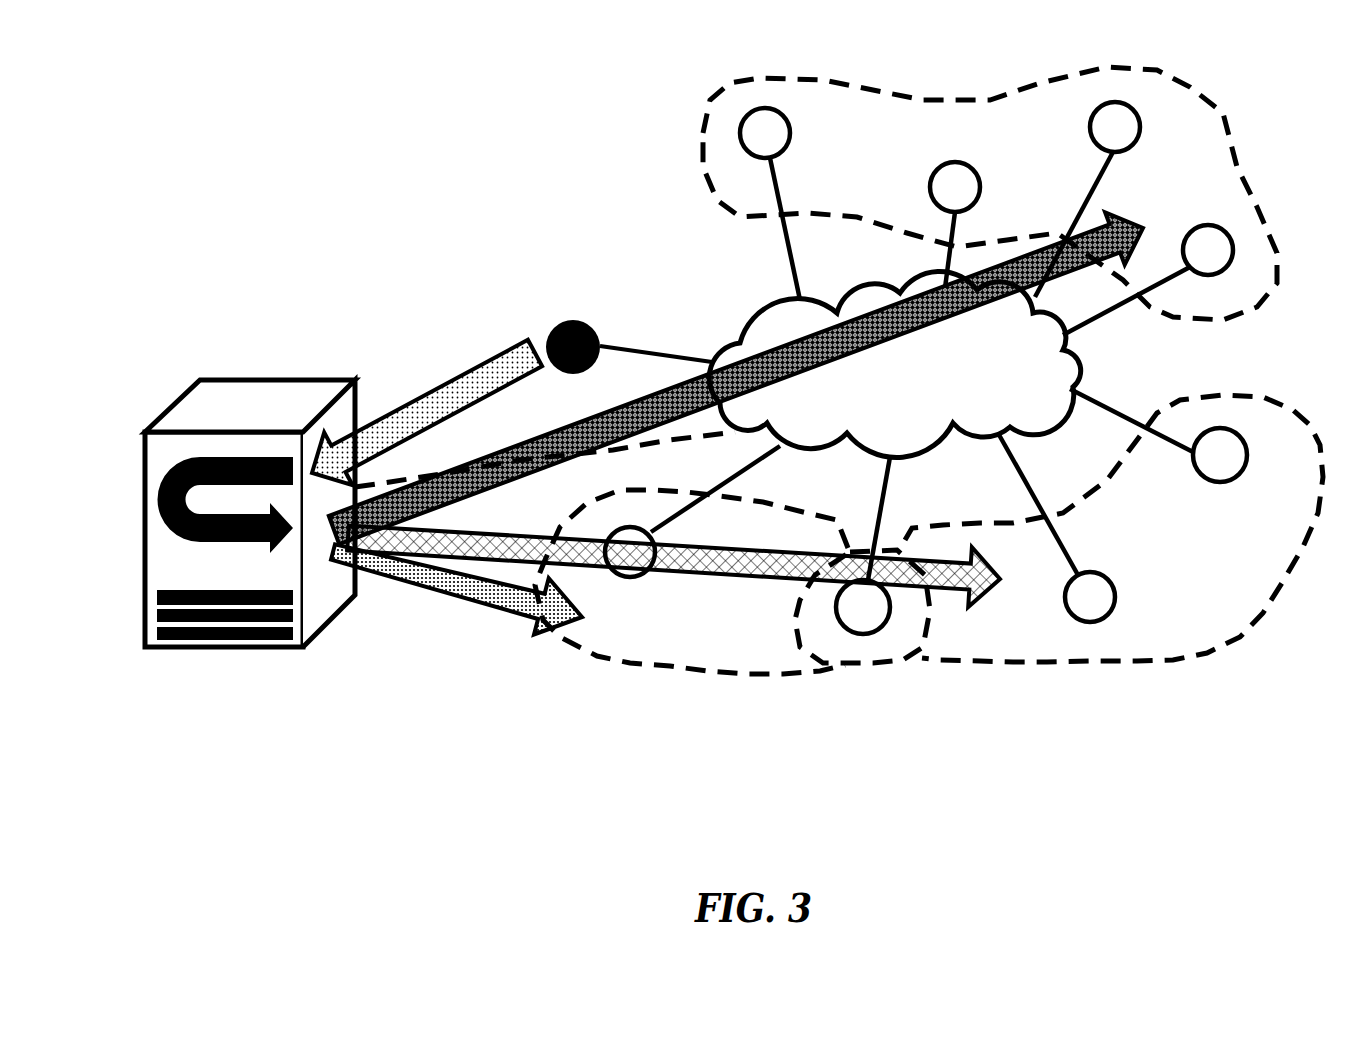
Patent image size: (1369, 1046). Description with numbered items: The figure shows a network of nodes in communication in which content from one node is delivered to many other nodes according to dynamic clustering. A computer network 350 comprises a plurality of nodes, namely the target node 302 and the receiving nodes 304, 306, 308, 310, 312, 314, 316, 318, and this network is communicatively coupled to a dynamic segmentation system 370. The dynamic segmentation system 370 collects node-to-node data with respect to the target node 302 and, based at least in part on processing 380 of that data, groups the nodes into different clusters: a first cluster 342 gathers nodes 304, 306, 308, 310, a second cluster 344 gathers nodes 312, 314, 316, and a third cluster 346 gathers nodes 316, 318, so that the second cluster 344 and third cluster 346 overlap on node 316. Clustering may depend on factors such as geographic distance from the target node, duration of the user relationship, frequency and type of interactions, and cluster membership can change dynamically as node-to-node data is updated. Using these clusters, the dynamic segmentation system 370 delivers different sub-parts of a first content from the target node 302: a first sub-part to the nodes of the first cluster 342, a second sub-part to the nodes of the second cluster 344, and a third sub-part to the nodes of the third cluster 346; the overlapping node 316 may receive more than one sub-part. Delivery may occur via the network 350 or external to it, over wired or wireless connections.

The target node 302 is at (565, 320).
The node 304 is at (791, 133).
The node 306 is at (978, 170).
The node 308 is at (1141, 130).
The node 310 is at (1195, 227).
The node 312 is at (1237, 481).
The node 314 is at (1114, 615).
The node 316 is at (891, 607).
The node 318 is at (617, 573).
The first cluster 342 is at (983, 100).
The second cluster 344 is at (1147, 667).
The third cluster 346 is at (663, 677).
The computer network 350 is at (894, 364).
The dynamic segmentation system 370 is at (250, 513).
The processing 380 is at (222, 541).